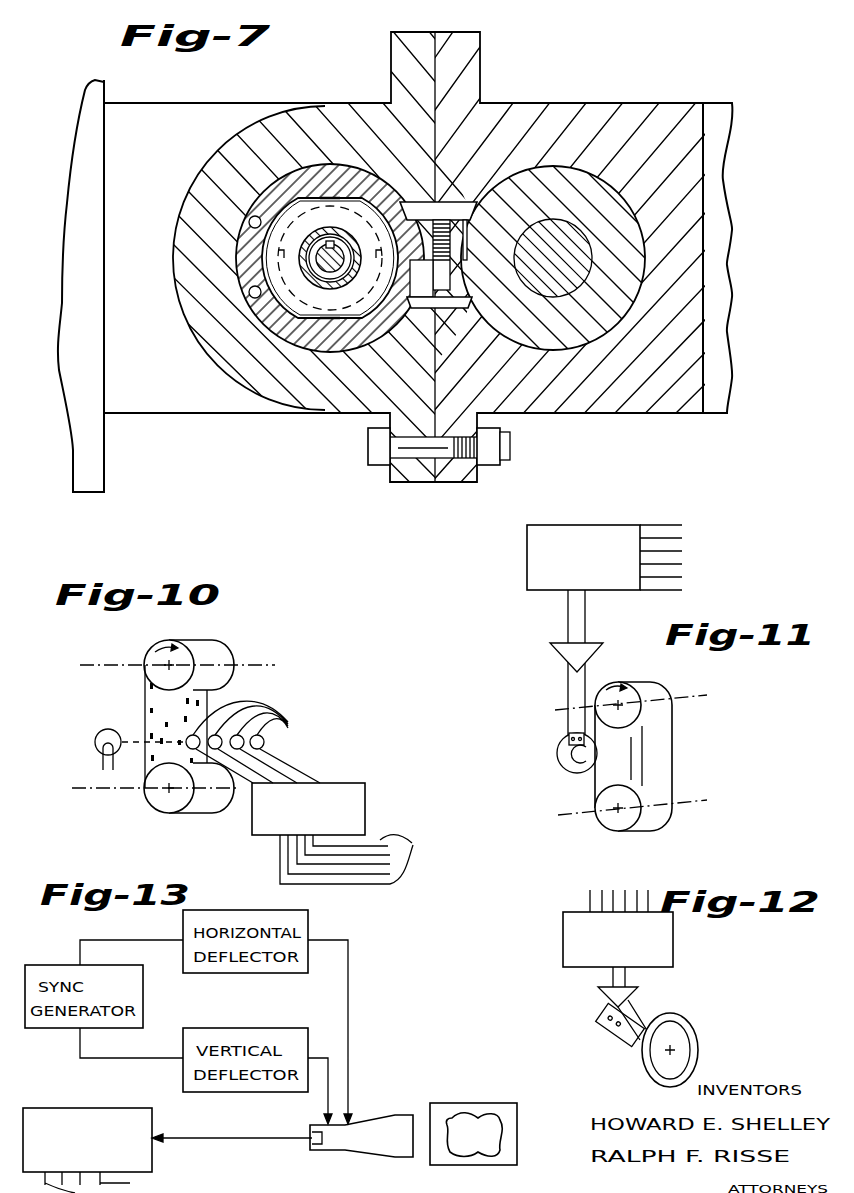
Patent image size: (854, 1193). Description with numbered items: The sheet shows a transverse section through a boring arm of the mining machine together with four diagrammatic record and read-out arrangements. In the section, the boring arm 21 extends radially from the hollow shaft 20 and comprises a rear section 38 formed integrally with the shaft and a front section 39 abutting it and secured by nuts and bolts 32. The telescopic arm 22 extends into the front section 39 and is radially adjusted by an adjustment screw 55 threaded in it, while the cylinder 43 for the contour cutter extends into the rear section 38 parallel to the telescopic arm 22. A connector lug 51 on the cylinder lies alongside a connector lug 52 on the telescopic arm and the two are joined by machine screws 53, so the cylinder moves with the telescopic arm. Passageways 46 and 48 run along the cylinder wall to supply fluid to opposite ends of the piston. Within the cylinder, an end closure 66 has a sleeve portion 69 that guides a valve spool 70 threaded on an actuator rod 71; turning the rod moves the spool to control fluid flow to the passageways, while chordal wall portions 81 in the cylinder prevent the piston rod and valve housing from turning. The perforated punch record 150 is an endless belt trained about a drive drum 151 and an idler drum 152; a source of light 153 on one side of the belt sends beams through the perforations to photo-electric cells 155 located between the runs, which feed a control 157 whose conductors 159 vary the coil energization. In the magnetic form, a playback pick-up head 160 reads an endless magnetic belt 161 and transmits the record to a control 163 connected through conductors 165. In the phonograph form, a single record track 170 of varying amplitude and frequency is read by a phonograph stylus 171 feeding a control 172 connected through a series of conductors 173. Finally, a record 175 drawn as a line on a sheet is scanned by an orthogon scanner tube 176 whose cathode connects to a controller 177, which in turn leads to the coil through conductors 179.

In FIG. 7, the hollow shaft 20 is at (193, 419).
In FIG. 7, the boring arm 21 is at (612, 99).
In FIG. 7, the telescopic arm 22 is at (607, 180).
In FIG. 7, the nuts and bolts 32 is at (378, 466).
In FIG. 7, the rear section 38 is at (227, 373).
In FIG. 7, the front section 39 is at (660, 414).
In FIG. 7, the cylinder 43 is at (324, 318).
In FIG. 7, the fluid pressure passageway 46 is at (250, 292).
In FIG. 7, the passageway 48 is at (248, 222).
In FIG. 7, the connector lug 51 is at (448, 213).
In FIG. 7, the connector lug 52 is at (423, 290).
In FIG. 7, the machine screws 53 is at (447, 292).
In FIG. 7, the adjustment screw 55 is at (583, 262).
In FIG. 7, the end closure 66 is at (273, 313).
In FIG. 7, the sleeve portion 69 is at (433, 198).
In FIG. 7, the valve spool 70 is at (327, 243).
In FIG. 7, the threaded adjustment actuator rod 71 is at (318, 285).
In FIG. 7, the chordal wall portions 81 is at (333, 200).
In FIG. 10, the punch record 150 is at (208, 716).
In FIG. 10, the drive drum 151 is at (232, 660).
In FIG. 10, the idler drum 152 is at (148, 800).
In FIG. 10, the source of light 153 is at (100, 740).
In FIG. 10, the photo-electric cells 155 is at (253, 742).
In FIG. 10, the control 157 is at (360, 793).
In FIG. 10, the conductors 159 is at (363, 858).
In FIG. 11, the playback pick-up head 160 is at (561, 746).
In FIG. 11, the endless magnetic belt 161 is at (675, 749).
In FIG. 11, the control 163 is at (545, 586).
In FIG. 11, the conductors 165 is at (652, 592).
In FIG. 12, the single record track 170 is at (693, 1027).
In FIG. 12, the phonograph stylus 171 is at (647, 1018).
In FIG. 12, the control 172 is at (563, 930).
In FIG. 12, the conductors 173 is at (612, 902).
In FIG. 13, the record 175 is at (482, 1117).
In FIG. 13, the orthogon scanner tube 176 is at (396, 1115).
In FIG. 13, the controller 177 is at (115, 1108).
In FIG. 13, the conductors 179 is at (125, 1181).